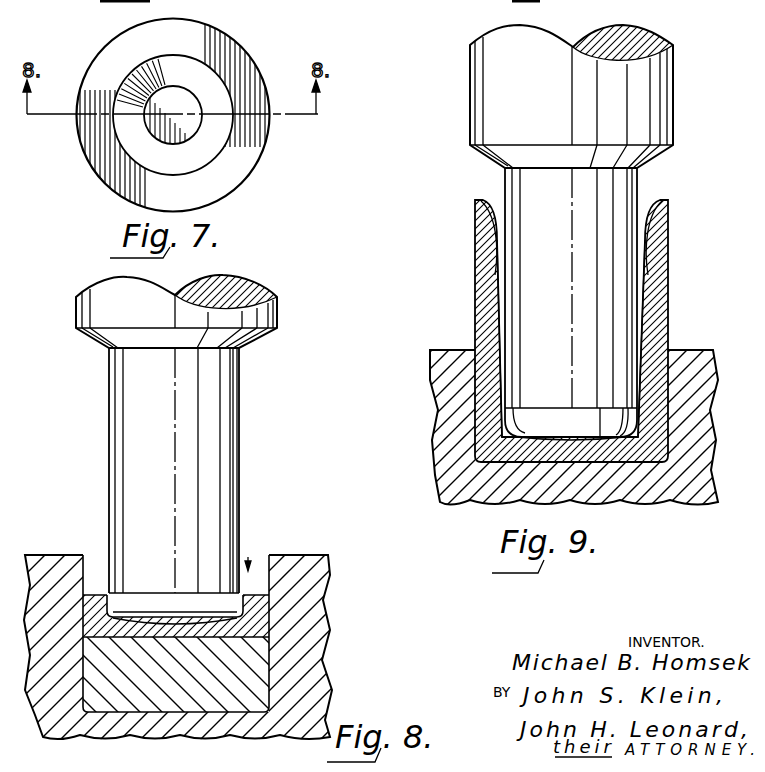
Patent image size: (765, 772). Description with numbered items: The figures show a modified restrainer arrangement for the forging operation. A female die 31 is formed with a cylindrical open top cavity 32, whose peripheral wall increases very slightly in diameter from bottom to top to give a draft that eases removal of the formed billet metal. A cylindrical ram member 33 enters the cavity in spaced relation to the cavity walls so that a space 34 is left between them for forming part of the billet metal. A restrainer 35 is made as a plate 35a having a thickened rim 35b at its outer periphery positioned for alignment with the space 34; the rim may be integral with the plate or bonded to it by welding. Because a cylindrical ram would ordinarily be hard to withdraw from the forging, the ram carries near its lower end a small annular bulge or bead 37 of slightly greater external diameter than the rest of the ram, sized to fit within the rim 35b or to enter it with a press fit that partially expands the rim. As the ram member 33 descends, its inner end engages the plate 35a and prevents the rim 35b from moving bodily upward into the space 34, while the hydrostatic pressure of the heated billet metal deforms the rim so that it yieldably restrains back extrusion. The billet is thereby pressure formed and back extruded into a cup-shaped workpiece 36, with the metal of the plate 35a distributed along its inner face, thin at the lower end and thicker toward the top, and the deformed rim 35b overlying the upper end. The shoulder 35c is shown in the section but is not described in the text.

In FIG. 8, the female die 31 is at (307, 670).
In FIG. 8, the cylindrical open top cavity 32 is at (262, 556).
In FIG. 8, the ram member 33 is at (222, 483).
In FIG. 8, the space 34 is at (249, 560).
In FIG. 8, the restrainer 35 is at (250, 623).
In FIG. 8, the plate 35a is at (177, 632).
In FIG. 9, the plate 35a is at (493, 261).
In FIG. 8, the thickened rim 35b is at (257, 592).
In FIG. 9, the thickened rim 35b is at (487, 222).
In FIG. 8, the shoulder of insert 35c is at (270, 597).
In FIG. 9, the cup-shaped workpiece 36 is at (487, 299).
In FIG. 8, the annular bulge or bead 37 is at (113, 612).